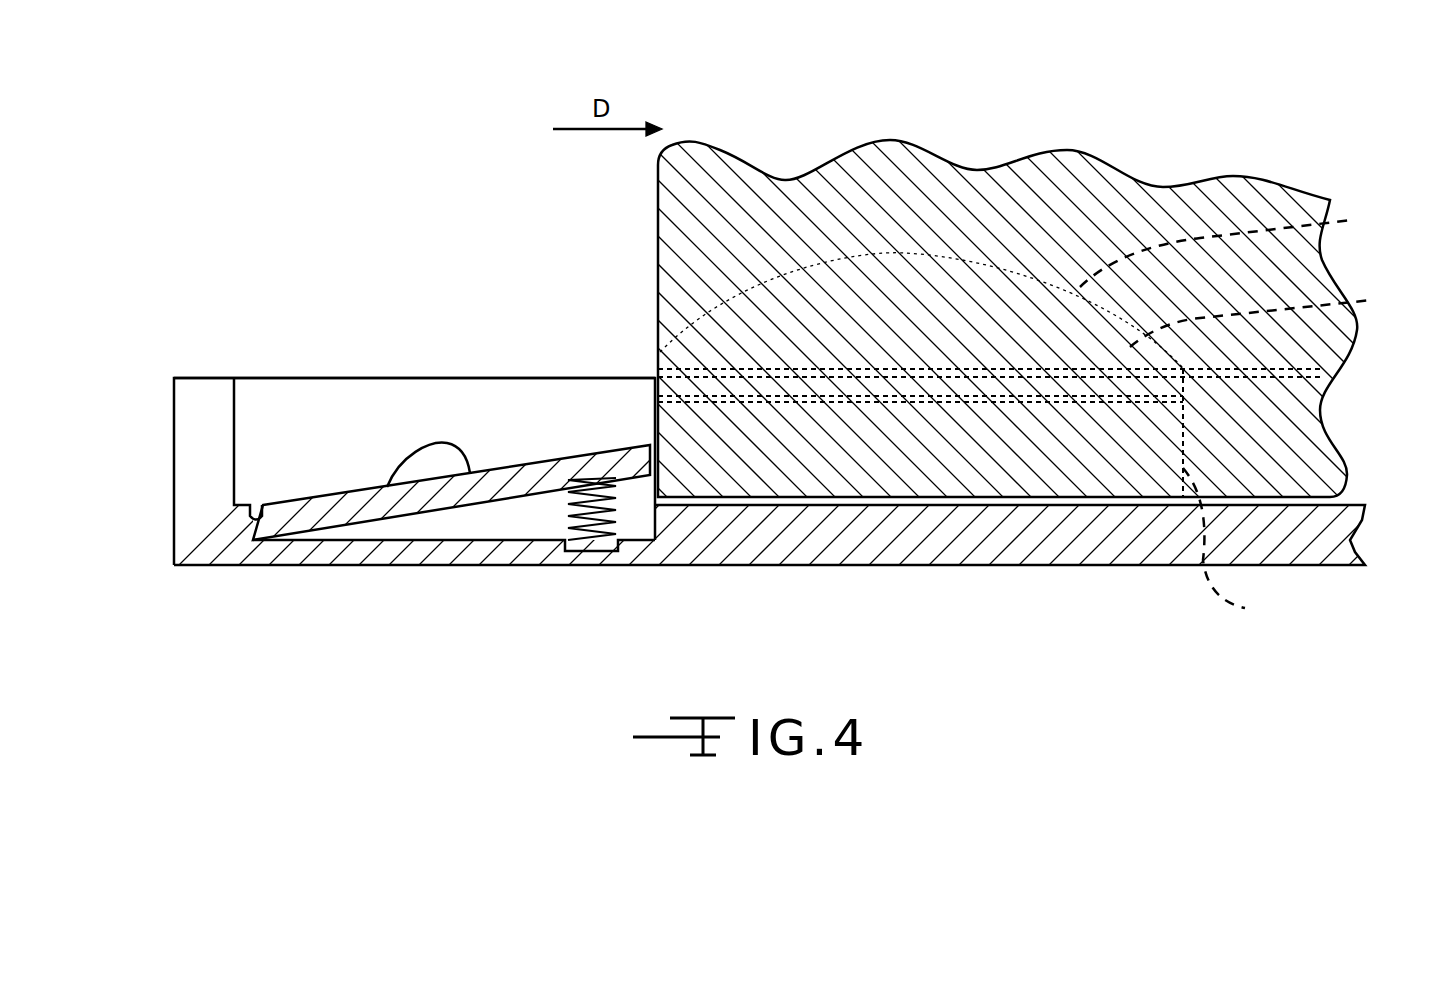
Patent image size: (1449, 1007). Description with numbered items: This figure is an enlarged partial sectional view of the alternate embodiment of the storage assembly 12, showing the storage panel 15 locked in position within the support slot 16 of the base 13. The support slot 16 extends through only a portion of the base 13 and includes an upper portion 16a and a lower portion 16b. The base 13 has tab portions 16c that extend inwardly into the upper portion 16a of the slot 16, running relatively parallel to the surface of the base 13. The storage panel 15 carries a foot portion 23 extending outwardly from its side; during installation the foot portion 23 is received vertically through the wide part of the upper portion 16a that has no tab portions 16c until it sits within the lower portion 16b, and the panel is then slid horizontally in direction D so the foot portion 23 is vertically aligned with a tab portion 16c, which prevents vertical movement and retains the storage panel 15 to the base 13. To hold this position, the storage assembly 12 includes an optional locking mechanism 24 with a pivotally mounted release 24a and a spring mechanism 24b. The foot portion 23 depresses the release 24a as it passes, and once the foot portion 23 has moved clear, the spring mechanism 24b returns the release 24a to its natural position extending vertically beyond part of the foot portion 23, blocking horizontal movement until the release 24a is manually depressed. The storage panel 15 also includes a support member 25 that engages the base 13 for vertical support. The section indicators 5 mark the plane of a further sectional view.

The section line 5- 5 is at (972, 88).
The storage assembly 12 is at (512, 209).
The base 13 is at (174, 500).
The storage panel 15 is at (1238, 176).
The support slot 16 is at (373, 428).
The upper portion 16a is at (473, 397).
The lower portion 16b is at (278, 468).
The tab portion 16c is at (1286, 315).
The foot portion 23 is at (1235, 546).
The locking mechanism 24 is at (472, 476).
The release 24a is at (387, 487).
The spring mechanism 24b is at (262, 520).
The support member 25 is at (1248, 243).